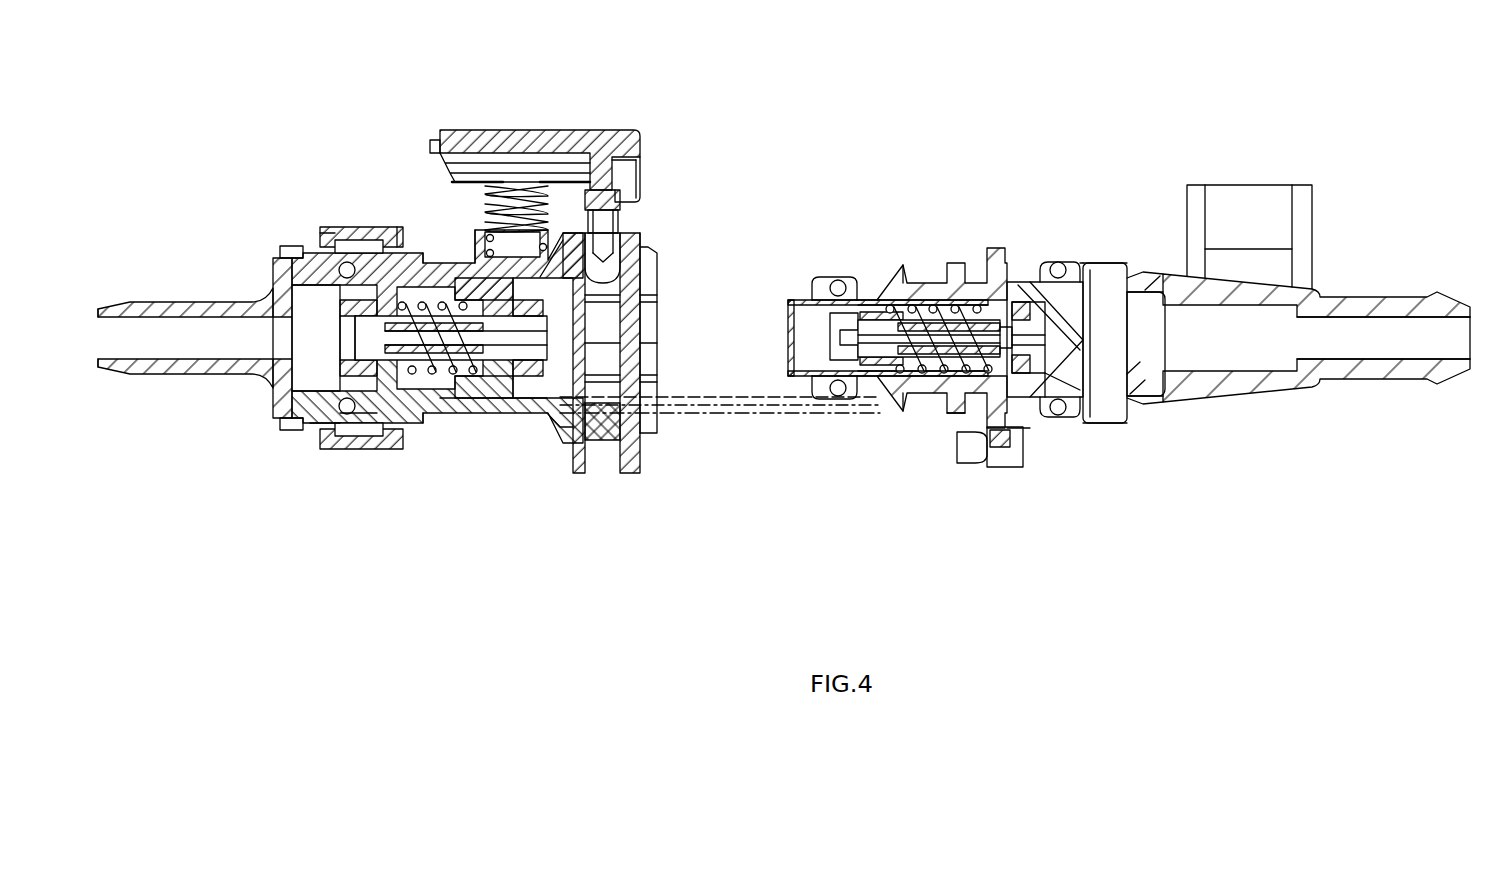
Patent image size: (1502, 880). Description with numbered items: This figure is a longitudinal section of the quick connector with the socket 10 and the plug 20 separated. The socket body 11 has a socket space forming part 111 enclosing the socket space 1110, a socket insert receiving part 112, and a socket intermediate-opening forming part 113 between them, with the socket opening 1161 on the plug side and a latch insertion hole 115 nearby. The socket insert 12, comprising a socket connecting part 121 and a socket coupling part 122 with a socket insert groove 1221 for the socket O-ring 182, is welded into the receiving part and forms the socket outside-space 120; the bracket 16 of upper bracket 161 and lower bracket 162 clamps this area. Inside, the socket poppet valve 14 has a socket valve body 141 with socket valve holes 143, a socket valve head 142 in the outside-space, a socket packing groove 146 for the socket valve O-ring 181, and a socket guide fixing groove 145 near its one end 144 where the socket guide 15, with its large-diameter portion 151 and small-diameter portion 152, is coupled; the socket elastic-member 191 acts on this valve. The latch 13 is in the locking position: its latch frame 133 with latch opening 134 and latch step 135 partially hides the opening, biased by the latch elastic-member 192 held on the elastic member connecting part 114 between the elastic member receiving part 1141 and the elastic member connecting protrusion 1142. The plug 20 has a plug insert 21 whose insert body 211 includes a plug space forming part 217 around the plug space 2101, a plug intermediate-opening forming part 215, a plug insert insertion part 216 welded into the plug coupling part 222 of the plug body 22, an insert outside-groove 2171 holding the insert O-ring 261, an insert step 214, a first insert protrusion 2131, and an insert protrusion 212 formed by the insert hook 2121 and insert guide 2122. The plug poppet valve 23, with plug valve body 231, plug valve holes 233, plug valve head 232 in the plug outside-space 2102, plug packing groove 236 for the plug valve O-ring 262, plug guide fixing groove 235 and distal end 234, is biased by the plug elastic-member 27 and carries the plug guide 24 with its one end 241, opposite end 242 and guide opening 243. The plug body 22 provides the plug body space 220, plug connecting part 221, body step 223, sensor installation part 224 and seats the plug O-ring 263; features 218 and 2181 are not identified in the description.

The socket 10 is at (320, 140).
The socket body 11 is at (510, 420).
The socket space forming part 111 is at (465, 400).
The socket space 1110 is at (556, 380).
The socket insert receiving part 112 is at (293, 423).
The socket intermediate-opening forming part 113 is at (397, 225).
The elastic member connecting part 114 is at (467, 77).
The elastic member receiving part 1141 is at (482, 192).
The elastic member connecting protrusion 1142 is at (513, 240).
The latch insertion hole 115 is at (602, 443).
The socket opening 1161 is at (630, 337).
The socket insert 12 is at (168, 383).
The socket outside-space 120 is at (297, 350).
The socket connecting part 121 is at (152, 303).
The socket coupling part 122 is at (283, 270).
The socket insert groove 1221 is at (302, 258).
The latch 13 is at (623, 118).
The latch frame 133 is at (614, 172).
The latch opening 134 is at (597, 300).
The latch step 135 is at (640, 430).
The socket poppet valve 14 is at (450, 278).
The socket valve body 141 is at (440, 400).
The socket valve head 142 is at (343, 408).
The socket valve holes 143 is at (462, 288).
The one end of the socket poppet valve 144 is at (585, 363).
The socket guide fixing groove 145 is at (578, 334).
The socket packing groove 146 is at (340, 327).
The socket guide 15 is at (434, 290).
The large-diameter portion 151 is at (487, 380).
The small-diameter portion 152 is at (537, 377).
The bracket 16 is at (355, 213).
The upper bracket 161 is at (330, 230).
The lower bracket 162 is at (380, 450).
The socket valve O-ring 181 is at (352, 413).
The socket O-ring 182 is at (338, 425).
The socket elastic-member 191 is at (440, 388).
The latch elastic-member 192 is at (555, 200).
The plug 20 is at (1075, 185).
The plug insert 21 is at (925, 260).
The plug space 2101 is at (937, 400).
The plug outside-space 2102 is at (1090, 395).
The insert body 211 is at (923, 302).
The insert protrusion 212 is at (823, 458).
The insert hook 2121 is at (893, 398).
The insert guide 2122 is at (857, 398).
The first insert protrusion 2131 is at (953, 400).
The insert step 214 is at (1005, 300).
The plug intermediate-opening forming part 215 is at (1003, 447).
The plug insert insertion part 216 is at (1035, 410).
The plug space forming part 217 is at (817, 297).
The insert outside-groove 2171 is at (850, 297).
The sleeve 218 is at (1084, 266).
The sleeve edge 2181 is at (1075, 272).
The plug body 22 is at (1337, 285).
The plug body space 220 is at (1140, 367).
The plug connecting part 221 is at (1387, 306).
The plug coupling part 222 is at (1258, 385).
The body step 223 is at (1027, 423).
The sensor installation part 224 is at (1300, 194).
The plug poppet valve 23 is at (1022, 290).
The plug valve body 231 is at (1018, 297).
The plug valve head 232 is at (1053, 408).
The plug valve holes 233 is at (945, 325).
The distal end of the plug poppet valve 234 is at (855, 325).
The plug guide fixing groove 235 is at (935, 335).
The plug packing groove 236 is at (1100, 405).
The plug guide 24 is at (803, 287).
The one end of the plug guide 241 is at (792, 302).
The opposite end of the plug guide 242 is at (880, 318).
The guide opening 243 is at (850, 320).
The insert O-ring 261 is at (835, 270).
The plug valve O-ring 262 is at (1037, 300).
The plug O-ring 263 is at (1065, 262).
The plug elastic-member 27 is at (918, 380).